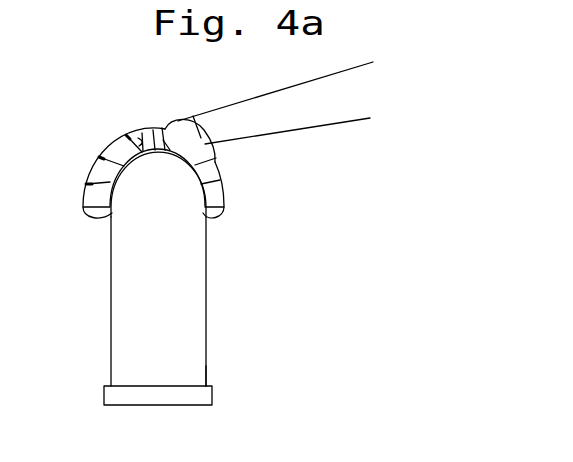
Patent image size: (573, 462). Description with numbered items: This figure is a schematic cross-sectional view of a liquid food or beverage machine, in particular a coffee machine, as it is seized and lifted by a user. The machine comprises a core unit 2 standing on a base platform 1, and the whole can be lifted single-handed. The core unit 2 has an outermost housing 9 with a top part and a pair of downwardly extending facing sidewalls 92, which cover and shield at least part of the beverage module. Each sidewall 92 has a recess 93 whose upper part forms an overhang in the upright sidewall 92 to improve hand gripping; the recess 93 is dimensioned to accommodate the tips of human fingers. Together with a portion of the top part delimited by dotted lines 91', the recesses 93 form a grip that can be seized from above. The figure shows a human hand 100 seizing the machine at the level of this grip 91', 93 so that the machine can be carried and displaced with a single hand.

The base platform 1 is at (104, 394).
The core unit 2 is at (158, 223).
The outermost housing 9 is at (207, 373).
The sidewalls 92 is at (111, 287).
The recess 93 is at (112, 215).
The grip portion of the top part 91' is at (153, 168).
The human hand 100 is at (162, 131).